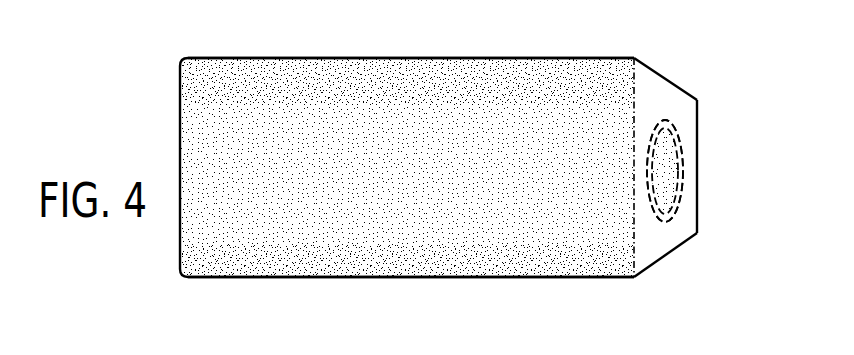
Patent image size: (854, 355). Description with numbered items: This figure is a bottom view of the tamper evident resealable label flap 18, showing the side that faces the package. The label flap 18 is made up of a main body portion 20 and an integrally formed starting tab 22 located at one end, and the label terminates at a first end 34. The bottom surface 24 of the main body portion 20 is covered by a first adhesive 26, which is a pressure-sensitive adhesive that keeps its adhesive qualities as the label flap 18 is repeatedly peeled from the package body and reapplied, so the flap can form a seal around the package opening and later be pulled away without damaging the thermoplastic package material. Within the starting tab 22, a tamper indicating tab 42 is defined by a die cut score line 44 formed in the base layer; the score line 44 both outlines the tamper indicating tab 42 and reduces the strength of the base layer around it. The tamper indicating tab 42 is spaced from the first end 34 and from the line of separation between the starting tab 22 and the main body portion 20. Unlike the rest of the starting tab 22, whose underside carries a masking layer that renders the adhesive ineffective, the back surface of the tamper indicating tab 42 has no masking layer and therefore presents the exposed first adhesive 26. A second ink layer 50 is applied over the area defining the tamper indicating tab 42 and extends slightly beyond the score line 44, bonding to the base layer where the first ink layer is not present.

The label flap 18 is at (392, 290).
The main body portion 20 is at (587, 270).
The starting tab 22 is at (678, 76).
The bottom surface 24 is at (283, 78).
The first adhesive 26 is at (551, 72).
The first end 34 is at (700, 172).
The tamper indicating tab 42 is at (679, 226).
The score line 44 is at (678, 147).
The second ink layer 50 is at (658, 124).